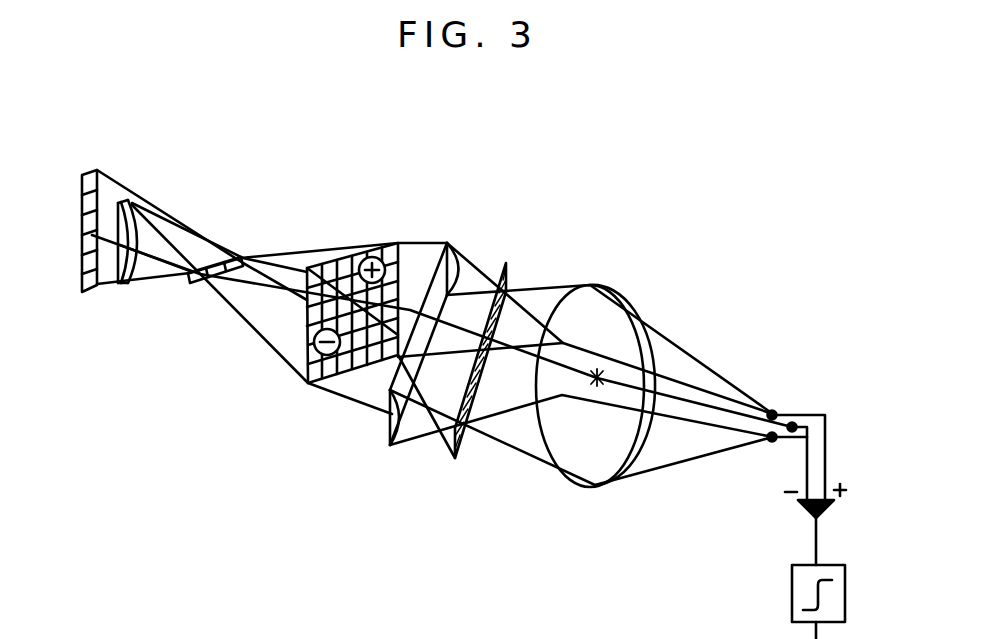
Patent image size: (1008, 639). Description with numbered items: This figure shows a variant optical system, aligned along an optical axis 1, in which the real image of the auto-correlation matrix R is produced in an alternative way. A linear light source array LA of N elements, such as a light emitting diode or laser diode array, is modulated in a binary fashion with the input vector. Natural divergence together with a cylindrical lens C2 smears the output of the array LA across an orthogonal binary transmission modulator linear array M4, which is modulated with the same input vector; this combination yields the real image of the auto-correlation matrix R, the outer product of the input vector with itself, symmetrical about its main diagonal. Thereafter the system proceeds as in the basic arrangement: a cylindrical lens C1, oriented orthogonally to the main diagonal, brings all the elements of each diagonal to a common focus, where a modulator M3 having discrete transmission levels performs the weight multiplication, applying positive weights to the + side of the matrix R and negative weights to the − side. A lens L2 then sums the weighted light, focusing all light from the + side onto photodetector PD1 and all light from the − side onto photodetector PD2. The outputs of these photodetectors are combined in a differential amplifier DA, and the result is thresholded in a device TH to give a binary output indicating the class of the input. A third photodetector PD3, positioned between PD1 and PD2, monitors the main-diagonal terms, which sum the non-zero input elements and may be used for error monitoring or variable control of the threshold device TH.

The linear light source array LA is at (80, 185).
The cylindrical lens C2 is at (137, 215).
The binary transmission modulator linear array M4 is at (226, 258).
The optical axis 1 is at (157, 260).
The real image of the auto-correlation matrix R is at (370, 252).
The cylindrical lens C1 is at (465, 262).
The modulator M3 is at (512, 295).
The lens L2 is at (632, 312).
The photodetector PD1 is at (772, 410).
The photodetector PD2 is at (770, 443).
The third photodetector PD3 is at (795, 422).
The differential amplifier DA is at (828, 507).
The threshold device TH is at (792, 597).